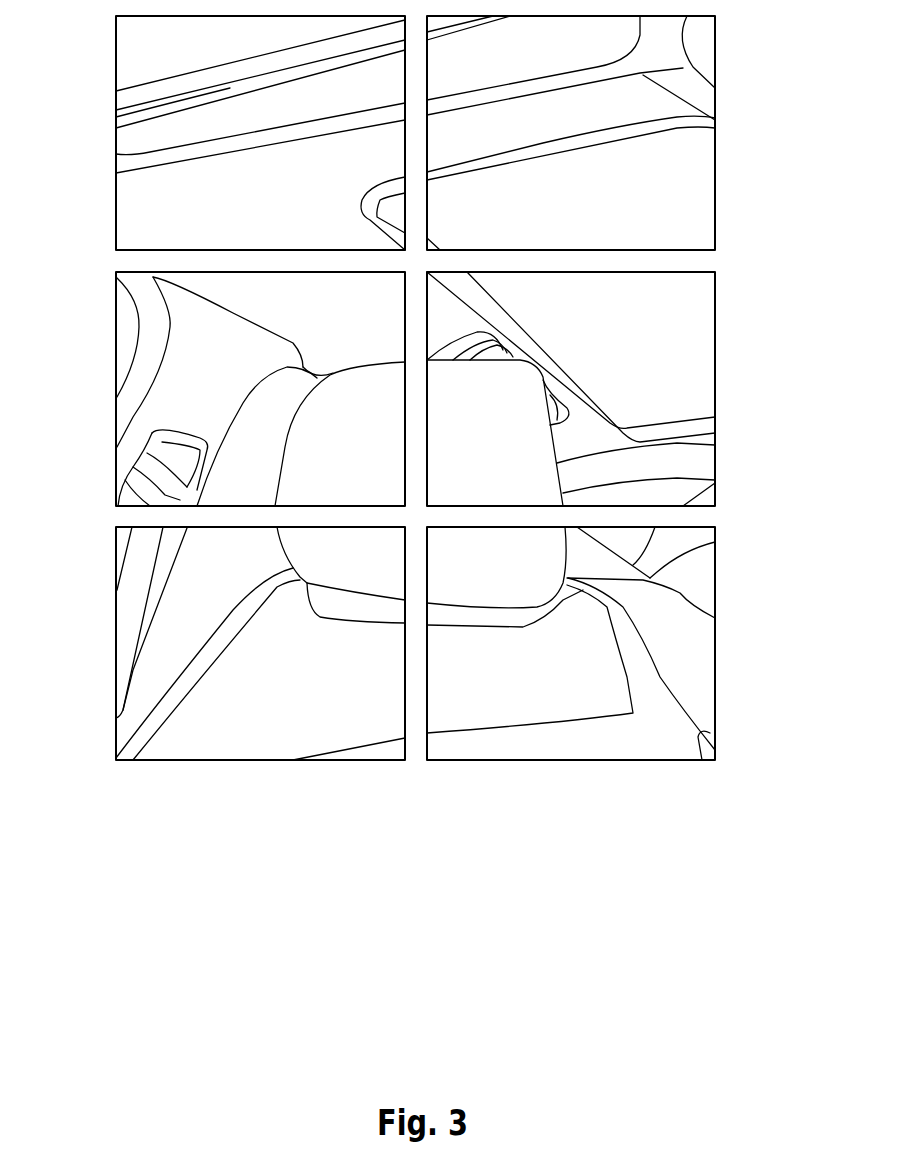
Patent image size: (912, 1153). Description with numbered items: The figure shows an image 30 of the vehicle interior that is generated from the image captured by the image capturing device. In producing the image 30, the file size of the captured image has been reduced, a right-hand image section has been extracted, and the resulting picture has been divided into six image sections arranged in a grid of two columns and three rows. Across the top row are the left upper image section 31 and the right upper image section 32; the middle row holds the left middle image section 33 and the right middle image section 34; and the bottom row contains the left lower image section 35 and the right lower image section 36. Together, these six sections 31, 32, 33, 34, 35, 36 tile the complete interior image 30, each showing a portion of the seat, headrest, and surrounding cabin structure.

The image 30 is at (757, 555).
The left upper image section 31 is at (115, 133).
The right upper image section 32 is at (715, 132).
The left middle image section 33 is at (115, 391).
The right middle image section 34 is at (715, 388).
The left lower image section 35 is at (115, 643).
The right lower image section 36 is at (716, 643).